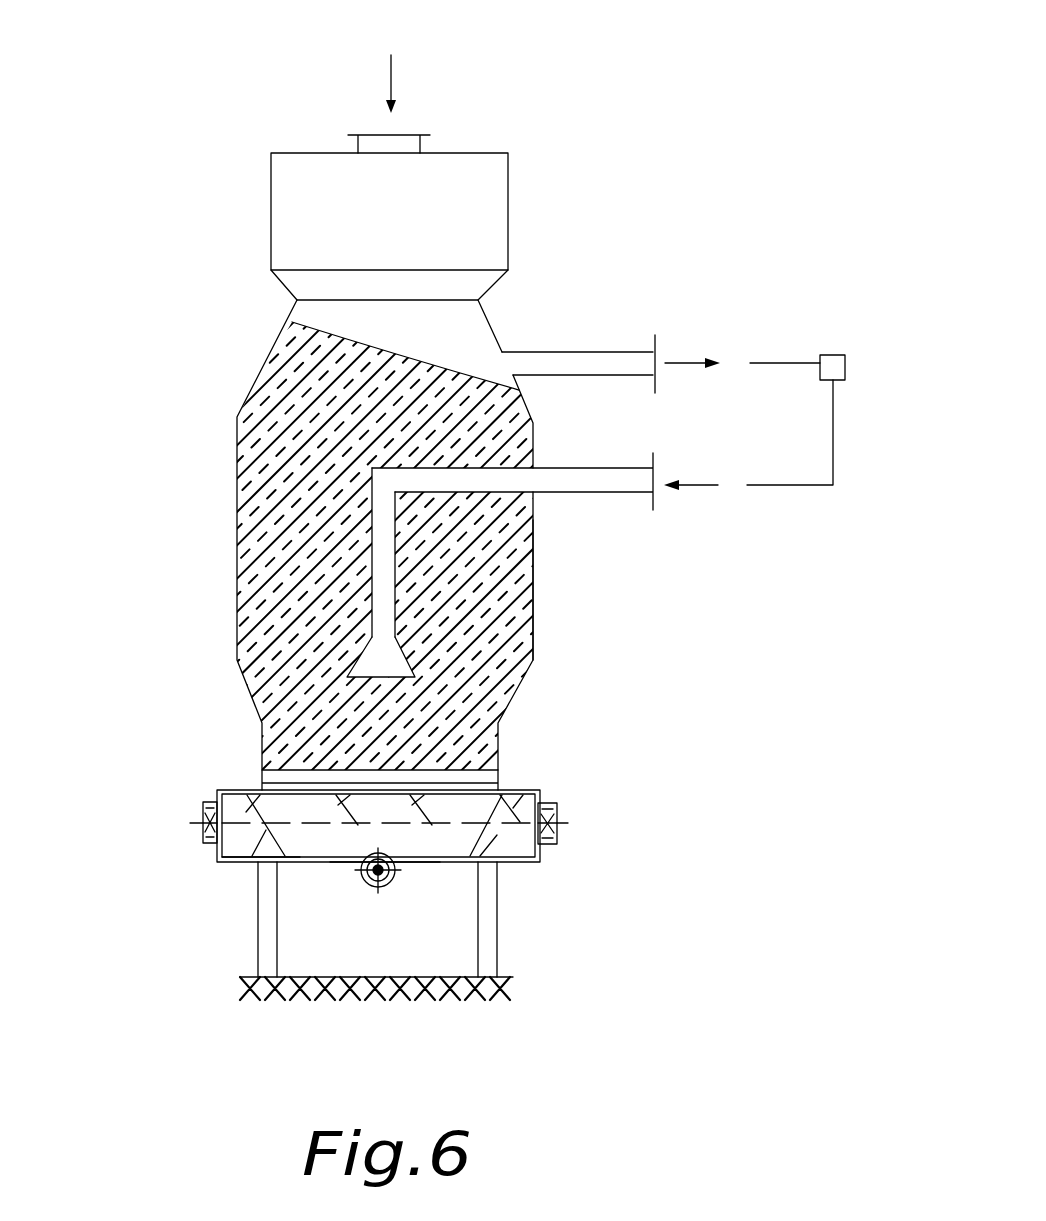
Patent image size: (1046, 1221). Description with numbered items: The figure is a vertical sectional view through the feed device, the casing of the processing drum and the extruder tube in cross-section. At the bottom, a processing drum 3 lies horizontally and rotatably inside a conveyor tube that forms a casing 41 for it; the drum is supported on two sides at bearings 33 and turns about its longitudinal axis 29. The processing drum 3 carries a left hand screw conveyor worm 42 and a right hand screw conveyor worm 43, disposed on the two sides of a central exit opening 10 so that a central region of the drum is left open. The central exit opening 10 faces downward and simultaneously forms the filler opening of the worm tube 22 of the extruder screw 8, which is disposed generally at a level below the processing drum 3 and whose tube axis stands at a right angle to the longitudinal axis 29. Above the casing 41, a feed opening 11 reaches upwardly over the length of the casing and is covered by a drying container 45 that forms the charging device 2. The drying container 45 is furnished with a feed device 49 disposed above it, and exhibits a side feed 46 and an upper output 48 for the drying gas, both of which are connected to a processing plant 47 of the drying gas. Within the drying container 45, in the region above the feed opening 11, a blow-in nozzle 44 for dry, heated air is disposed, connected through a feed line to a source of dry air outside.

The charging device 2 is at (533, 550).
The processing drum 3 is at (558, 843).
The extruder screw 8 is at (378, 886).
The central exit opening 10 is at (397, 868).
The feed opening 11 is at (453, 770).
The worm tube 22 is at (387, 882).
The longitudinal axis 29 is at (235, 820).
The bearings 33 is at (205, 836).
The casing 41 is at (252, 875).
The left hand screw conveyor worm 42 is at (228, 862).
The right hand screw conveyor worm 43 is at (515, 840).
The blow-in nozzle 44 is at (393, 665).
The drying container 45 is at (533, 595).
The side feed 46 is at (642, 482).
The processing plant 47 is at (835, 365).
The upper output 48 is at (617, 362).
The feed device 49 is at (397, 146).